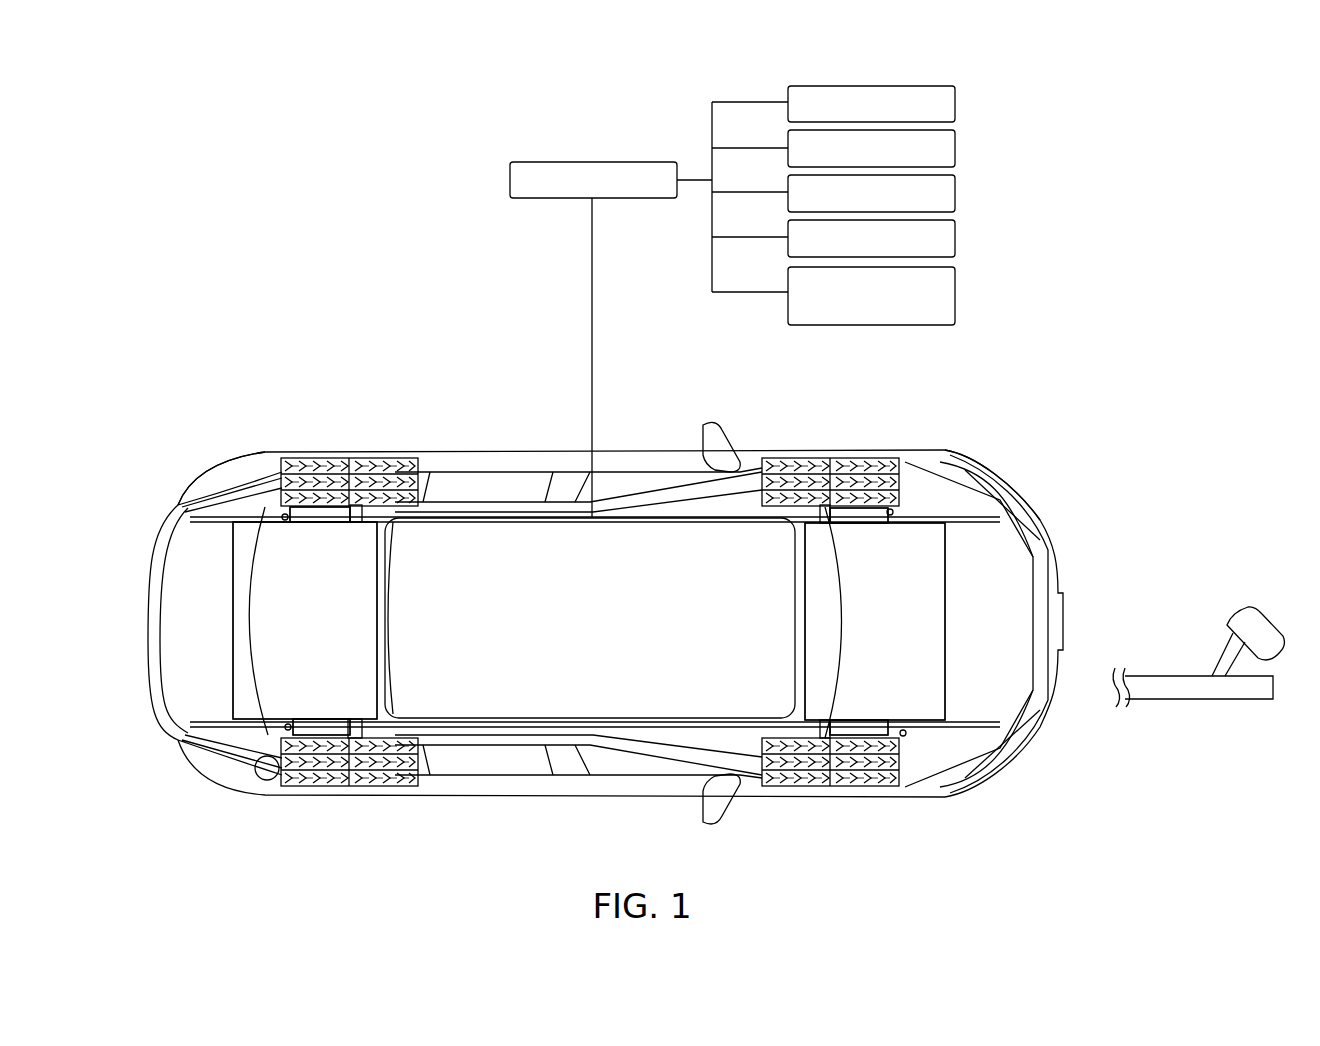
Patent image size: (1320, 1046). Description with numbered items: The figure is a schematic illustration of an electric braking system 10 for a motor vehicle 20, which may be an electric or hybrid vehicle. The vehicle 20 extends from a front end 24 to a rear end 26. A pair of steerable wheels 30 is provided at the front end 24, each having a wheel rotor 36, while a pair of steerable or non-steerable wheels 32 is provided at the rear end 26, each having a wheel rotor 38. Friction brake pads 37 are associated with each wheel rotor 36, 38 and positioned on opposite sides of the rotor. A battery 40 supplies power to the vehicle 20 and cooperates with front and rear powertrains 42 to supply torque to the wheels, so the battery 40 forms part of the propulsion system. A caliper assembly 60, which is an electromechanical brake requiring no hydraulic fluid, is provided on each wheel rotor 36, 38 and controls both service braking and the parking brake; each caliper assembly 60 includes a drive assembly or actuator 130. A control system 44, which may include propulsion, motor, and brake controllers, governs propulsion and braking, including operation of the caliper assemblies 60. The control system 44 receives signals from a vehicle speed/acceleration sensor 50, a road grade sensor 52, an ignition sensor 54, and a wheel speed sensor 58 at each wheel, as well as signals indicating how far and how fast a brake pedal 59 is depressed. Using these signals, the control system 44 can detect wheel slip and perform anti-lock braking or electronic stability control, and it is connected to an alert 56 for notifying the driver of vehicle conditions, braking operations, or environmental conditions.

The electric brake/braking system 10 is at (287, 392).
The motor vehicle 20 is at (518, 822).
The front end 24 is at (1003, 462).
The rear end 26 is at (246, 462).
The steerable wheels 30 is at (860, 463).
The wheels 32 is at (307, 460).
The wheel rotor 36 is at (808, 450).
The friction brake pads 37 is at (376, 621).
The wheel rotor 38 is at (368, 457).
The battery 40 is at (590, 618).
The powertrains 42 is at (589, 621).
The control system 44 is at (510, 182).
The vehicle speed/acceleration sensor 50 is at (955, 104).
The road grade sensor 52 is at (955, 148).
The ignition sensor 54 is at (955, 193).
The alert 56 is at (955, 238).
The wheel speed sensor 58 is at (955, 292).
The brake pedal 59 is at (1203, 700).
The caliper assembly 60 is at (595, 622).
The drive assembly or actuator 130 is at (285, 517).